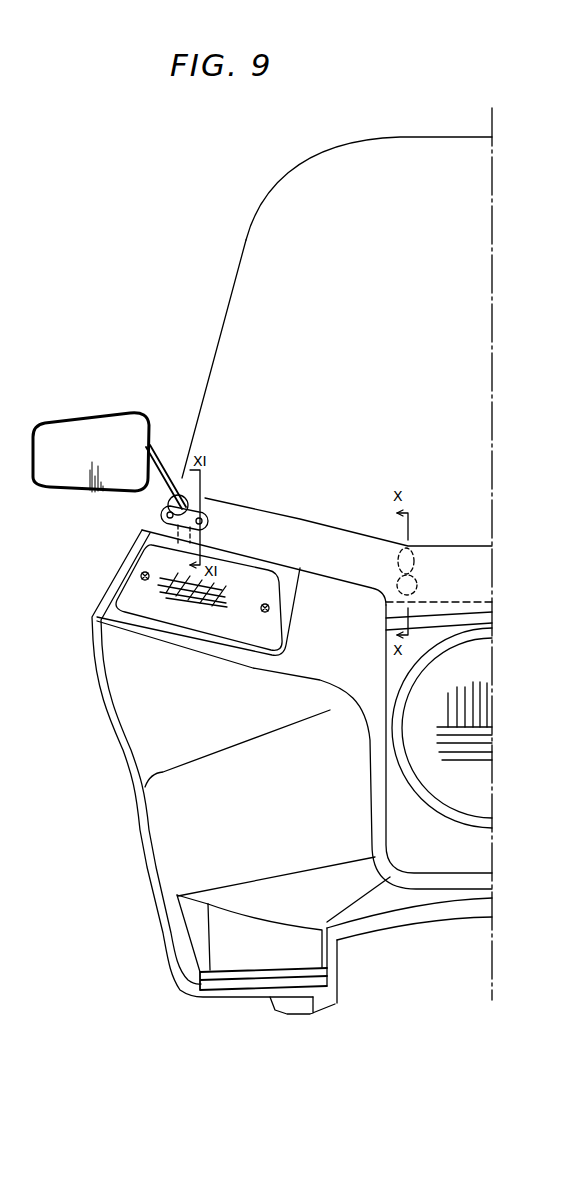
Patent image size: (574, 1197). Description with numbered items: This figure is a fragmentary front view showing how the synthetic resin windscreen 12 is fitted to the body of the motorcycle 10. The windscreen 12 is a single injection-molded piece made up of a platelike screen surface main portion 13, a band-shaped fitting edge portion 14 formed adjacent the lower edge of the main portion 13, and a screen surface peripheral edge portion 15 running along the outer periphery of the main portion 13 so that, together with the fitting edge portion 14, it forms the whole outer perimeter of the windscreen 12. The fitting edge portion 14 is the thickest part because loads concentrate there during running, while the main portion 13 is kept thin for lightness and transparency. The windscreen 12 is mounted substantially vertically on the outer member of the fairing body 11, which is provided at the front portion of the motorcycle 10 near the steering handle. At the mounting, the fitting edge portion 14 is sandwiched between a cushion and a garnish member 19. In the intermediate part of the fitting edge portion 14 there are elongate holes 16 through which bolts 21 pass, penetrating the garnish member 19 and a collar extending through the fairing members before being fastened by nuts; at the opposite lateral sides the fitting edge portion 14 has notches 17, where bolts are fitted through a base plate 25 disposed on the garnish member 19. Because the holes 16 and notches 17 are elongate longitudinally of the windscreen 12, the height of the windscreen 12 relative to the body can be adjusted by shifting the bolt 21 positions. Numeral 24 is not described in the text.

The motorcycle 10 is at (415, 930).
The fairing body 11 is at (131, 749).
The synthetic resin windscreen 12 is at (230, 270).
The screen surface main portion 13 is at (388, 335).
The fitting edge portion 14 is at (453, 560).
The screen surface peripheral edge portion 15 is at (293, 173).
The elongate hole 16 is at (397, 553).
The notch 17 is at (213, 537).
The garnish member 19 is at (303, 525).
The bolt 21 is at (196, 505).
The rear view mirror 24 is at (84, 427).
The base plate 25 is at (161, 513).